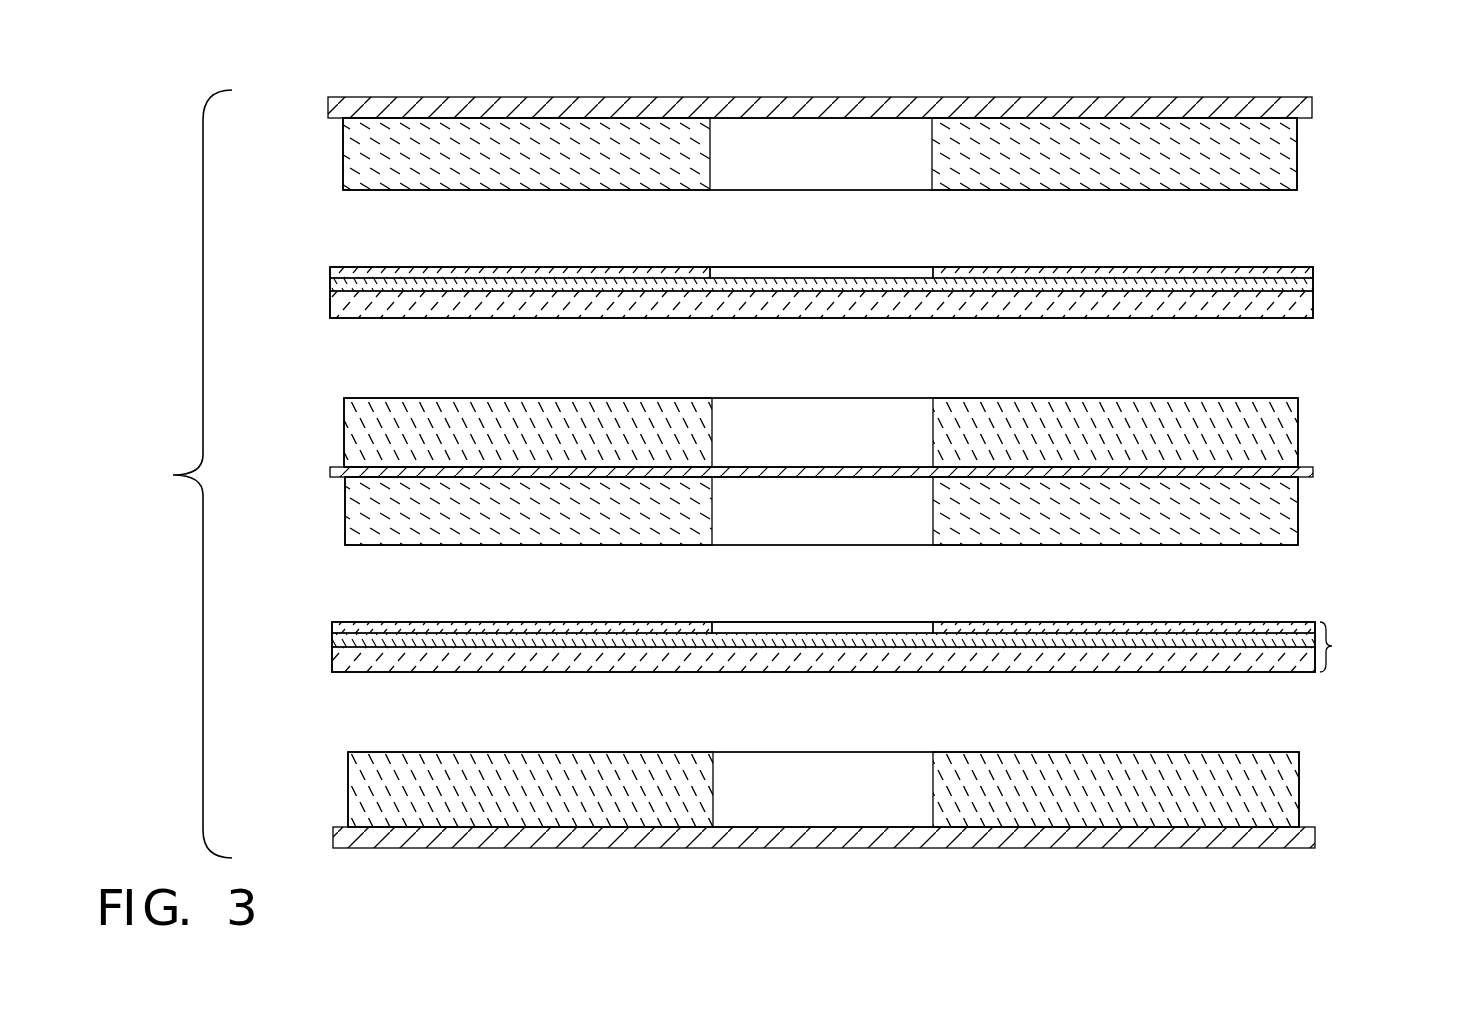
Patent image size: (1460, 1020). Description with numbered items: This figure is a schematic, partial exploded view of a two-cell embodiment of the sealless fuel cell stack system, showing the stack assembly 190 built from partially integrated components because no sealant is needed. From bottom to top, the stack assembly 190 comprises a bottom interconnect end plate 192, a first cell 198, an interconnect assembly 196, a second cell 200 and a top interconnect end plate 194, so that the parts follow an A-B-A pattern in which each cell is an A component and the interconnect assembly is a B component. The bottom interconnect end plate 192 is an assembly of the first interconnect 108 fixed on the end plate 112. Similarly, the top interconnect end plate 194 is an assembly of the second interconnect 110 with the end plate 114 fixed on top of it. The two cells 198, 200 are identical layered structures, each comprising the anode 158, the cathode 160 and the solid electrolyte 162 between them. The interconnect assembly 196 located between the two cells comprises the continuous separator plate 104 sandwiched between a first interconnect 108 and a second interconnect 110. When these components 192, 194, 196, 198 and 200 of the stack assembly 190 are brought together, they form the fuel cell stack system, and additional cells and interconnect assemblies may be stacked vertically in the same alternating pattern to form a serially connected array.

The continuous separator plate 104 is at (808, 467).
The first interconnect 108 is at (1103, 398).
The second interconnect 110 is at (530, 190).
The end plate 112 is at (1262, 849).
The end plate 114 is at (1212, 97).
The anode 158 is at (395, 318).
The cathode 160 is at (400, 267).
The solid electrolyte 162 is at (330, 285).
The stack assembly 190 is at (182, 130).
The bottom interconnect end plate 192 is at (318, 772).
The top interconnect end plate 194 is at (1330, 140).
The interconnect assembly 196 is at (1338, 432).
The cell 198 is at (1350, 622).
The cell 200 is at (1340, 282).